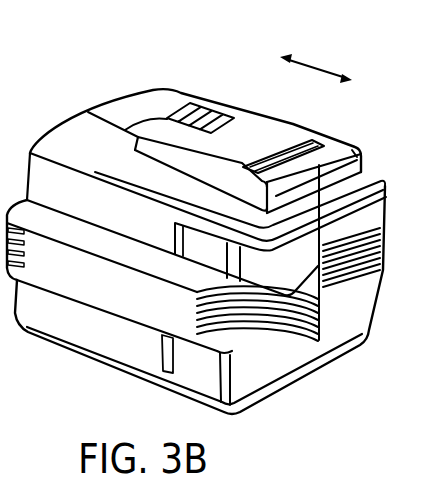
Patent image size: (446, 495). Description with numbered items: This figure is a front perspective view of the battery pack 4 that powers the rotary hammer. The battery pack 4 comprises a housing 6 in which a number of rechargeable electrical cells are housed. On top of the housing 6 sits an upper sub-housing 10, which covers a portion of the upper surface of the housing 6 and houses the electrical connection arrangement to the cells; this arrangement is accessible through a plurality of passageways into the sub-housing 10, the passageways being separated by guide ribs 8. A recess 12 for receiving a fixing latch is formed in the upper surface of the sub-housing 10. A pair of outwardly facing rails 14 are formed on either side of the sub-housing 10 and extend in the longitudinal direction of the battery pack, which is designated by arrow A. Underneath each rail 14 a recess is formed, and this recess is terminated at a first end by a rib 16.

The battery pack 4 is at (100, 88).
The housing 6 is at (31, 316).
The guide ribs 8 is at (203, 100).
The upper sub-housing 10 is at (296, 129).
The recess 12 is at (320, 142).
The rails 14 is at (163, 158).
The rib 16 is at (252, 208).
The arrow A is at (318, 64).